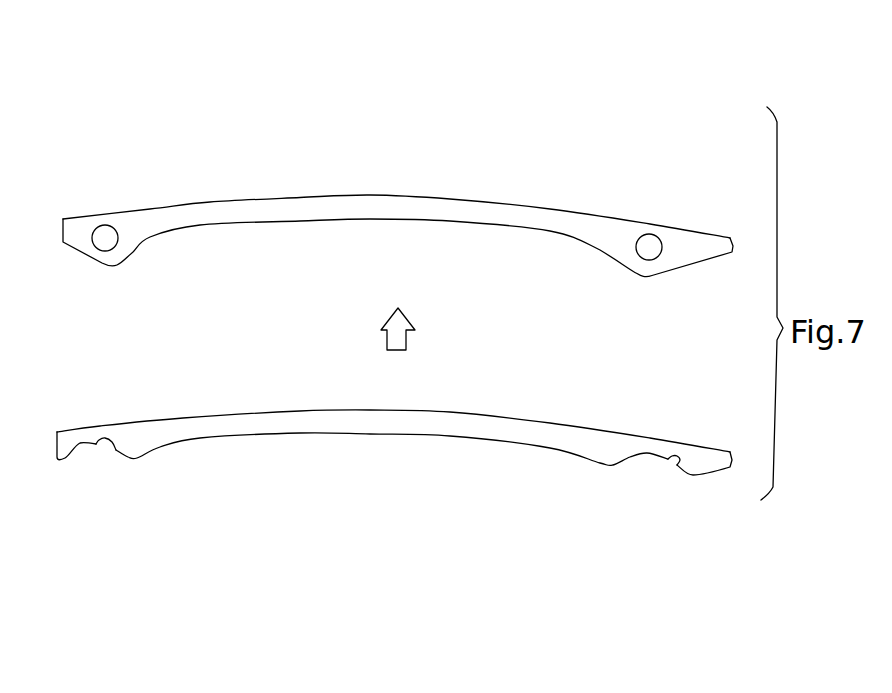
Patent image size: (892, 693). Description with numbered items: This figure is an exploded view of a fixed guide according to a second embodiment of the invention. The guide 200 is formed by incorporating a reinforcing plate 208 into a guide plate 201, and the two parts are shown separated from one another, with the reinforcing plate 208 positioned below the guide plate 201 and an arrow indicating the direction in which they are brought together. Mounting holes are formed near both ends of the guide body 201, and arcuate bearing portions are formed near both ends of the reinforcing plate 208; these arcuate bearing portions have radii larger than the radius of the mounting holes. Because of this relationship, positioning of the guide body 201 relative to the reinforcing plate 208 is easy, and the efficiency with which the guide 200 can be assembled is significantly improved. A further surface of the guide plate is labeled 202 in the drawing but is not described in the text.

The guide 200 is at (412, 188).
The guide plate 201 is at (583, 218).
The second surface of weight member 202 is at (210, 202).
The reinforcing plate 208 is at (418, 435).